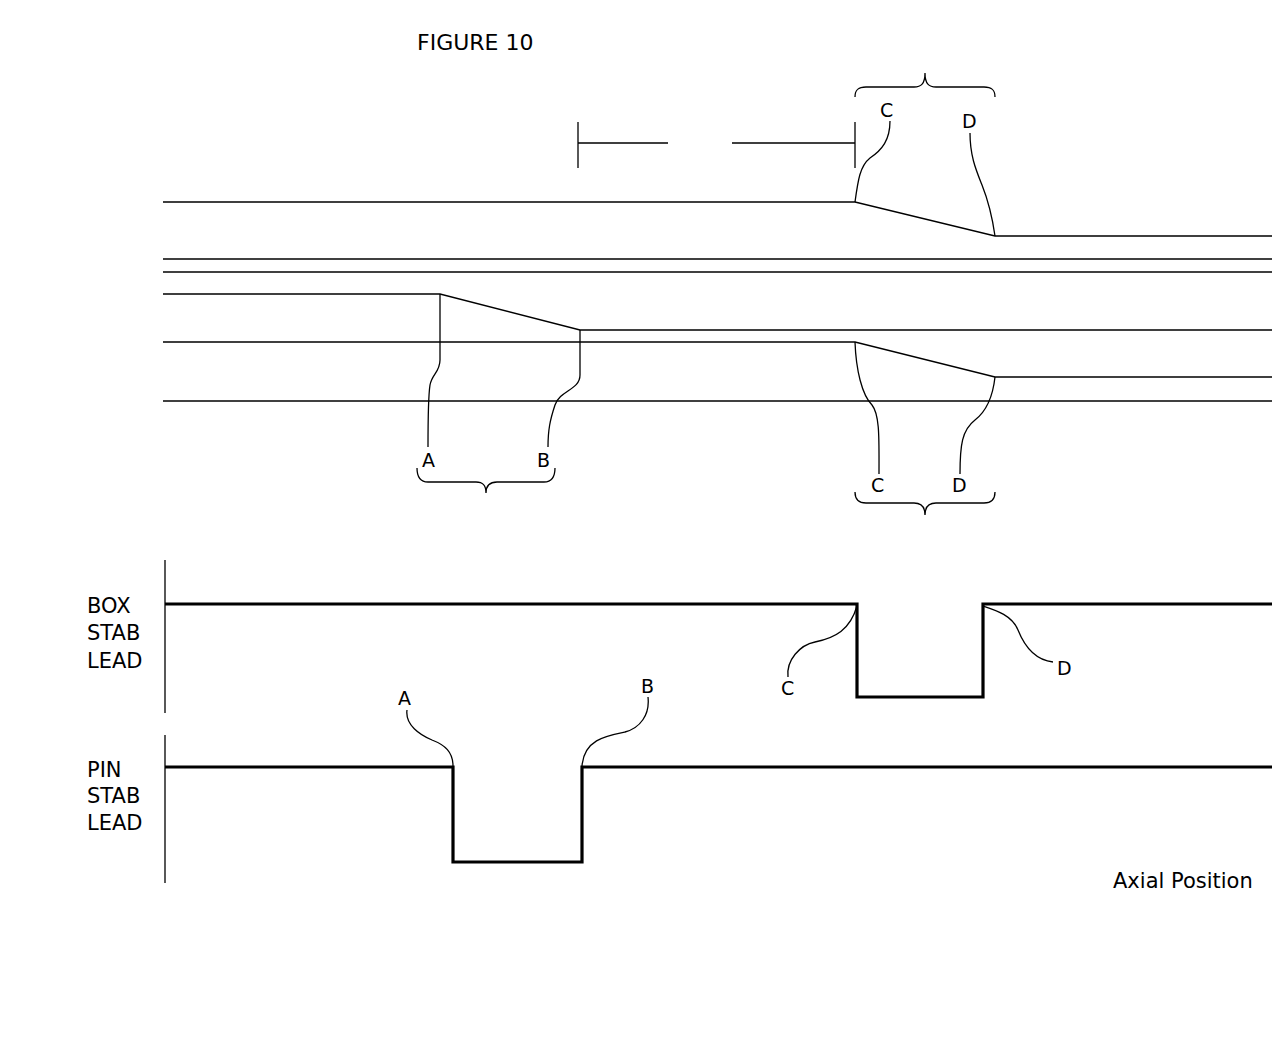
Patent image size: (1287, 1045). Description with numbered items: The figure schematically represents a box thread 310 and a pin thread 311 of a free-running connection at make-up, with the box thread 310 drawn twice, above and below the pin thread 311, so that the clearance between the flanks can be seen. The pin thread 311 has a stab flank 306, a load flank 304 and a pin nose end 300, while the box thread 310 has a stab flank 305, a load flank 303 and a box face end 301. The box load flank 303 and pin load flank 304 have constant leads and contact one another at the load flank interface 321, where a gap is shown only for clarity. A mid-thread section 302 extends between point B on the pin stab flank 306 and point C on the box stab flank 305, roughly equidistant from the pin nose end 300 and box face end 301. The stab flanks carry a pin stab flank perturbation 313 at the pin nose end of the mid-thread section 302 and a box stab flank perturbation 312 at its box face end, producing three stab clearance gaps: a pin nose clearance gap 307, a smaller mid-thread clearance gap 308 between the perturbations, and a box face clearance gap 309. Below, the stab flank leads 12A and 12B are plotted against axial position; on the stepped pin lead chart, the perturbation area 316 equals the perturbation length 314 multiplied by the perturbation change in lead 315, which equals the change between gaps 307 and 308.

The pin nose end 300 is at (176, 436).
The box face end 301 is at (1261, 423).
The mid-thread section 302 is at (716, 145).
The box load flank 303 is at (185, 257).
The pin load flank 304 is at (185, 274).
The box stab flank 305 is at (185, 200).
The pin stab flank 306 is at (185, 296).
The pin nose clearance gap 307 is at (348, 323).
The mid-thread clearance gap 308 is at (707, 335).
The box face clearance gap 309 is at (1180, 350).
The box thread 310 is at (733, 247).
The pin thread 311 is at (758, 317).
The box stab flank perturbation 312 is at (925, 295).
The pin stab flank perturbation 313 is at (486, 497).
The perturbation length 314 is at (632, 820).
The perturbation change in lead 315 is at (523, 873).
The perturbation area 316 is at (523, 687).
The pin stab flank lead 12A is at (1222, 606).
The box stab flank lead 12B is at (1073, 769).
The load flank interface 321 is at (348, 266).